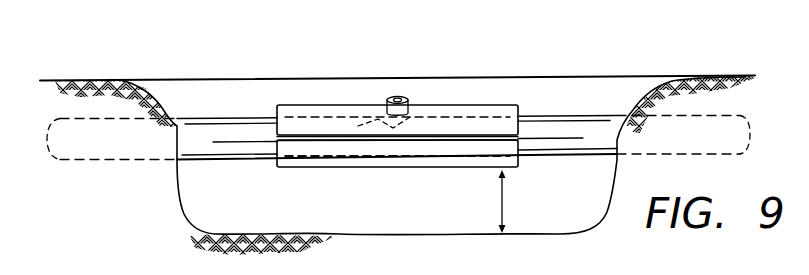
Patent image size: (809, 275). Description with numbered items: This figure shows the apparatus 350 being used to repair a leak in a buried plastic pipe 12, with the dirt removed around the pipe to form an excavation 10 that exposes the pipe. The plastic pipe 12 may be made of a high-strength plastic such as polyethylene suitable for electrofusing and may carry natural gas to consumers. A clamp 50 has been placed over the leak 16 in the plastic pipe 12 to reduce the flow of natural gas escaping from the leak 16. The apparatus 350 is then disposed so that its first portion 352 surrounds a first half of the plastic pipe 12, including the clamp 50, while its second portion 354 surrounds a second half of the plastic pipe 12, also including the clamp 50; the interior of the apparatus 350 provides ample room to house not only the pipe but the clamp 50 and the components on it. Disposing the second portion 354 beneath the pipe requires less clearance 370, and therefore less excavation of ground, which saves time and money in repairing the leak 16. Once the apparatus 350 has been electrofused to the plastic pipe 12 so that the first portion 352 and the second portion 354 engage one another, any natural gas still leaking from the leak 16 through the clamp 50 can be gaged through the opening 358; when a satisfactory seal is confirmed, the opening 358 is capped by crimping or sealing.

The excavation 10 is at (634, 108).
The plastic pipe 12 is at (236, 161).
The leak 16 is at (372, 128).
The clamp 50 is at (437, 158).
The apparatus 350 is at (397, 125).
The first portion 352 is at (470, 105).
The second portion 354 is at (314, 172).
The opening 358 is at (398, 96).
The clearance 370 is at (505, 200).